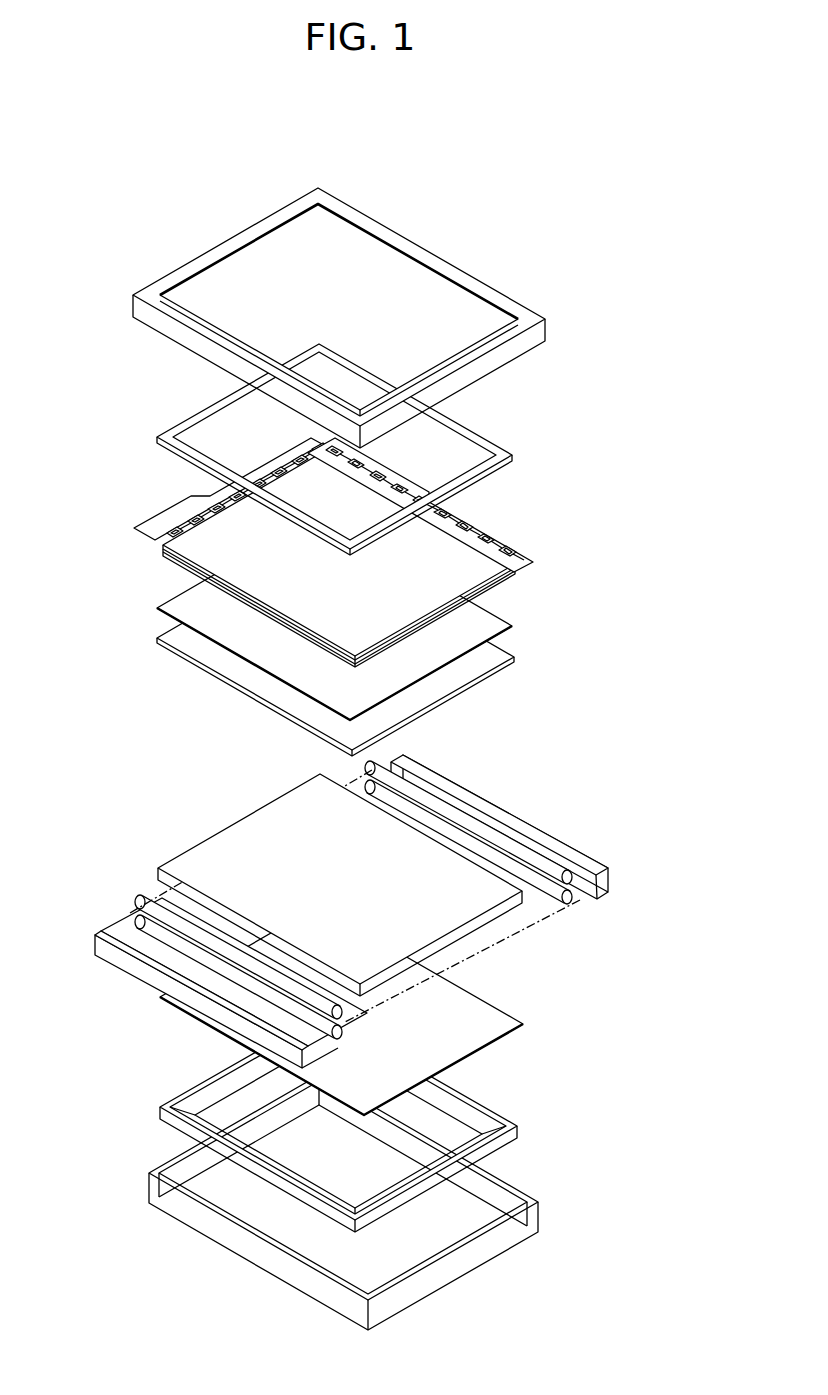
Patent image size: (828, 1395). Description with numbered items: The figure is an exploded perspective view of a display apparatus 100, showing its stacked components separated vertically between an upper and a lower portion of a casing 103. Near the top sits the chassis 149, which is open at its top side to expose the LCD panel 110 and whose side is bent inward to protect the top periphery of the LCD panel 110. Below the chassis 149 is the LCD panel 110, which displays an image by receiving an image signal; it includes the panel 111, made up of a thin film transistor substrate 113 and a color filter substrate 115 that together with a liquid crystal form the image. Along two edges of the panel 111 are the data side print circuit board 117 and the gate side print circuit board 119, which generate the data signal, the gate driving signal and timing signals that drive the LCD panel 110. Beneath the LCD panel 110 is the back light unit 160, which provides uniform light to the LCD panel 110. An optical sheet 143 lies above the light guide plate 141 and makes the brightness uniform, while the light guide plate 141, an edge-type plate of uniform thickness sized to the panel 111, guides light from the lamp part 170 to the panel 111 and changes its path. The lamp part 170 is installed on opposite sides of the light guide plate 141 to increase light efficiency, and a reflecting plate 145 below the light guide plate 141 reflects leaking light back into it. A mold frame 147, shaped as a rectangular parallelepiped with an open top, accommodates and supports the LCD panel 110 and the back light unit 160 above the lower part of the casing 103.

The display apparatus 100 is at (128, 203).
The casing 103 is at (477, 1260).
The liquid crystal display panel 110 is at (143, 553).
The panel 111 is at (603, 535).
The thin film transistor substrate 113 is at (518, 568).
The color filter substrate 115 is at (532, 553).
The data side print circuit board 117 is at (485, 515).
The gate side print circuit board 119 is at (160, 515).
The light guide plate 141 is at (232, 823).
The optical sheet 143 is at (515, 623).
The reflecting plate 145 is at (520, 1023).
The mold frame 147 is at (517, 1127).
The chassis 149 is at (512, 452).
The back light unit 160 is at (645, 962).
The lamp part 170 is at (592, 913).